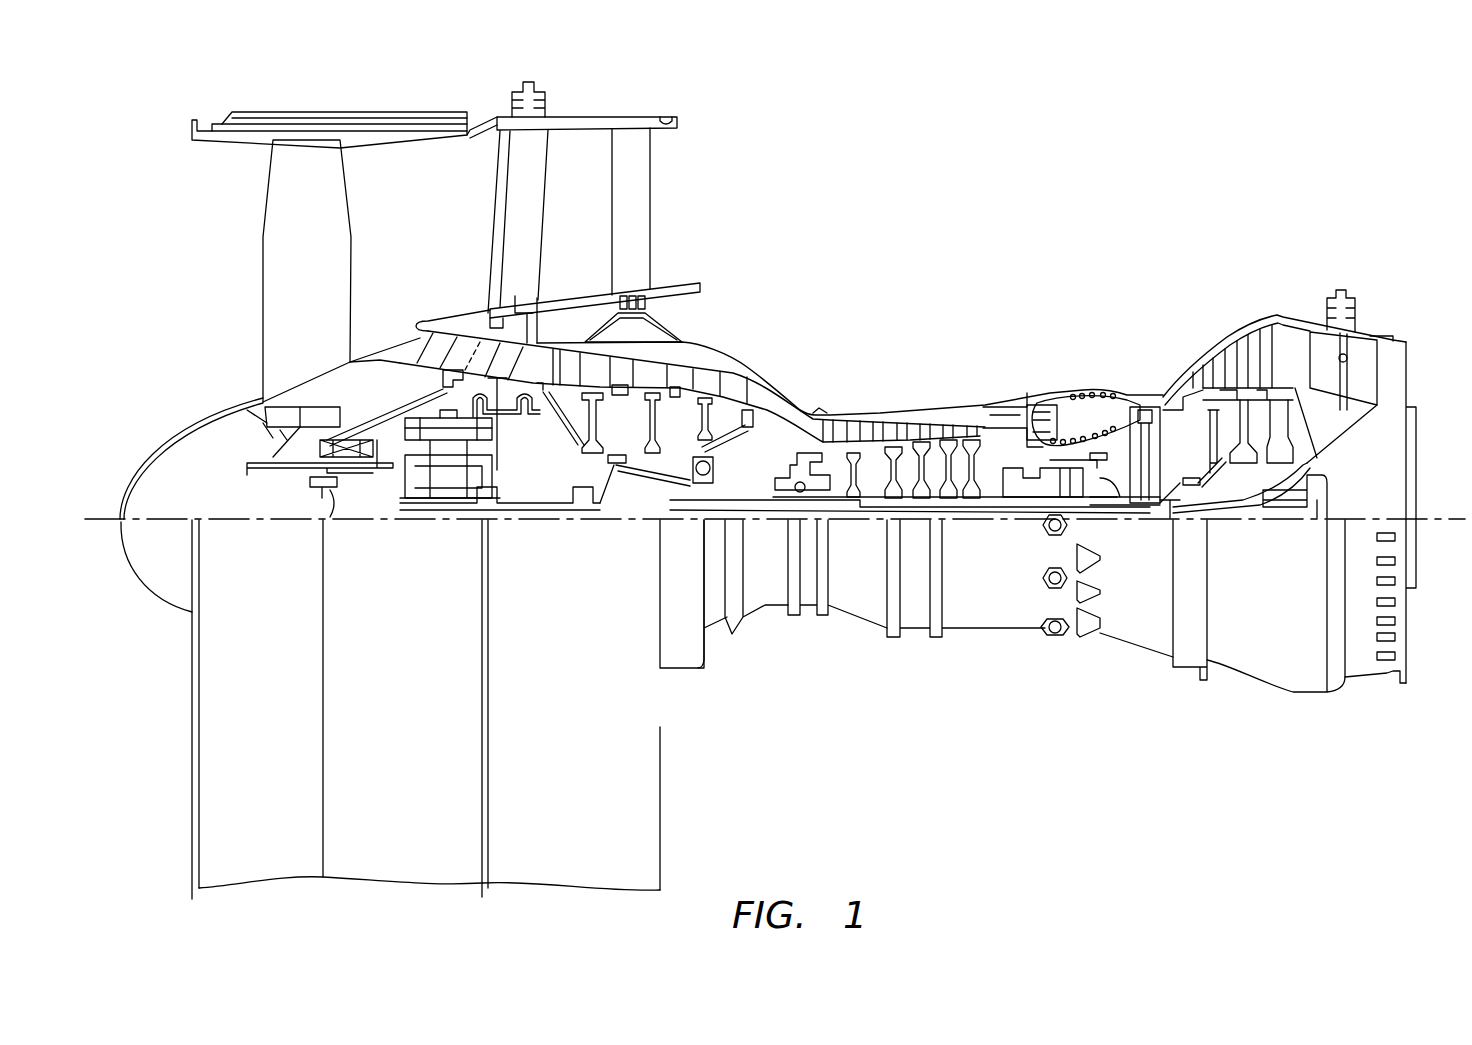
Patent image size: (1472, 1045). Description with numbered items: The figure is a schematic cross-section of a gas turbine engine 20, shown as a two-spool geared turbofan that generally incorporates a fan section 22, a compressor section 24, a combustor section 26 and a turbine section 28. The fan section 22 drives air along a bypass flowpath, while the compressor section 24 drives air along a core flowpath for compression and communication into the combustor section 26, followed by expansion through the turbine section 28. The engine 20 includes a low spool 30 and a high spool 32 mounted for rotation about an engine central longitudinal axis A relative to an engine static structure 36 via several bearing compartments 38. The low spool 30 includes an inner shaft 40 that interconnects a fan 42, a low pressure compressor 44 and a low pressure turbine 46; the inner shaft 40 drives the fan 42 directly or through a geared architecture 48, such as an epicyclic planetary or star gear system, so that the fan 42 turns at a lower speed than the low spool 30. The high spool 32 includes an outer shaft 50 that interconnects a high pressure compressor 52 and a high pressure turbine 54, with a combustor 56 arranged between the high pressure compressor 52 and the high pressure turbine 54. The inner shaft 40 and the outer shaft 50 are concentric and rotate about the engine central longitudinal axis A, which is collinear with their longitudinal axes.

The gas turbine engine 20 is at (1127, 173).
The fan section 22 is at (487, 105).
The compressor section 24 is at (497, 260).
The combustor section 26 is at (1077, 260).
The turbine section 28 is at (1340, 260).
The low spool 30 is at (747, 470).
The high spool 32 is at (976, 472).
The engine static structure 36 is at (910, 631).
The bearing compartments 38 is at (229, 598).
The inner shaft 40 is at (1108, 506).
The fan 42 is at (294, 328).
The low pressure compressor 44 is at (678, 362).
The low pressure turbine 46 is at (1253, 348).
The geared architecture 48 is at (442, 478).
The outer shaft 50 is at (1102, 478).
The high pressure compressor 52 is at (907, 472).
The high pressure turbine 54 is at (1143, 413).
The combustor 56 is at (1077, 425).
The engine central longitudinal axis A is at (1437, 519).